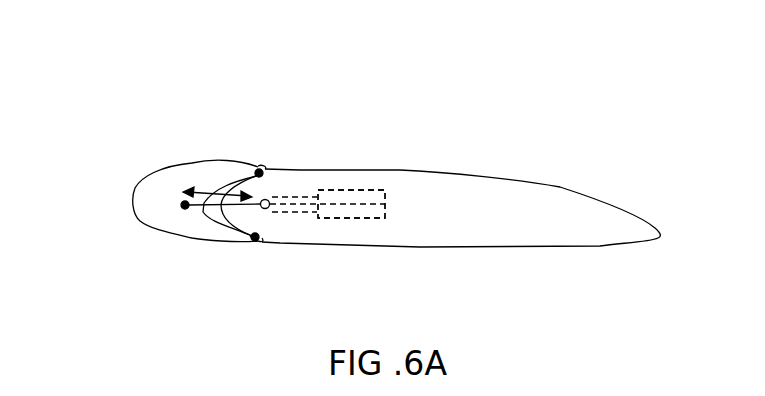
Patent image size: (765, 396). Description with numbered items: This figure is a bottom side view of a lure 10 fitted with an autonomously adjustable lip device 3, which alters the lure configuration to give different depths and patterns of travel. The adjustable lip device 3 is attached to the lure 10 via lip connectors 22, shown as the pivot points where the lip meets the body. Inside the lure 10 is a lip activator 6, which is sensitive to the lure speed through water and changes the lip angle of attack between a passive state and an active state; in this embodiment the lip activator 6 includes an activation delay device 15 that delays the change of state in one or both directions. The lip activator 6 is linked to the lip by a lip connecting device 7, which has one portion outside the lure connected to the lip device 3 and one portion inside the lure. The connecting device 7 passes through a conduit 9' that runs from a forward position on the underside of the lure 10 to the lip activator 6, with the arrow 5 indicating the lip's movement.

The lure 10 is at (308, 103).
The adjustable lip device 3 is at (160, 204).
The lip connectors 22 is at (260, 169).
The lip connecting device 7 is at (212, 210).
The actuating rod 5 is at (212, 163).
The conduit 9' is at (327, 244).
The lip activator 6 is at (371, 190).
The activation delay device 15 is at (351, 204).